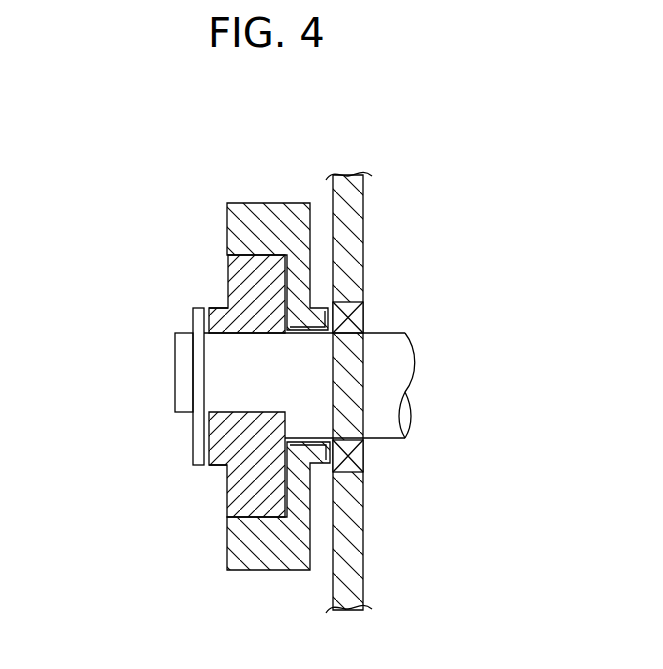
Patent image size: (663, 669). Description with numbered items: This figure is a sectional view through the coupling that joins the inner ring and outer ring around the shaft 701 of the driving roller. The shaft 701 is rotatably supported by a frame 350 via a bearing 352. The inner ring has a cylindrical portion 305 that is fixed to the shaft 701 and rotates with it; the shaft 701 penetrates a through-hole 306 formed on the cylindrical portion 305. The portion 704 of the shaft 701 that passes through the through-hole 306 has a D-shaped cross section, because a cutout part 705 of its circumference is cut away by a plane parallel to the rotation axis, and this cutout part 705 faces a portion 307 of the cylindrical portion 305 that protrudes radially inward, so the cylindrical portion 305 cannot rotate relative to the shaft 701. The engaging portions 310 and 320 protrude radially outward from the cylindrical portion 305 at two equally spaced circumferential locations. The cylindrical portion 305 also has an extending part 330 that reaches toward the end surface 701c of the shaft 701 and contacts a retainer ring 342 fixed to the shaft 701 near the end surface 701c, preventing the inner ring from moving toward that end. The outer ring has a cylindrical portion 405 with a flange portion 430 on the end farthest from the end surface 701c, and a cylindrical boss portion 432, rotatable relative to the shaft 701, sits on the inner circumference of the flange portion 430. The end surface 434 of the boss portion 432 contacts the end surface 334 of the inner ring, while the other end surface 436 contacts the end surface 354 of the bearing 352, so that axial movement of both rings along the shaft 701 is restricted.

The cylindrical portion 305 is at (247, 326).
The through-hole 306 is at (248, 350).
The protruding portion 307 is at (285, 419).
The engaging portion 310 is at (247, 275).
The engaging portion 320 is at (270, 500).
The extending part 330 is at (215, 306).
The end surface of the inner ring 334 is at (302, 333).
The retainer ring 342 is at (195, 466).
The frame 350 is at (363, 196).
The bearing 352 is at (363, 320).
The end surface of the bearing 354 is at (315, 333).
The cylindrical portion 405 is at (250, 215).
The flange portion 430 is at (318, 262).
The boss portion 432 is at (313, 333).
The end surface of the boss portion 434 is at (288, 270).
The end surface of the boss portion 436 is at (363, 308).
The shaft 701 is at (405, 333).
The end surface of the shaft 701c is at (175, 368).
The portion of the shaft 704 is at (253, 378).
The cutout part 705 is at (218, 435).